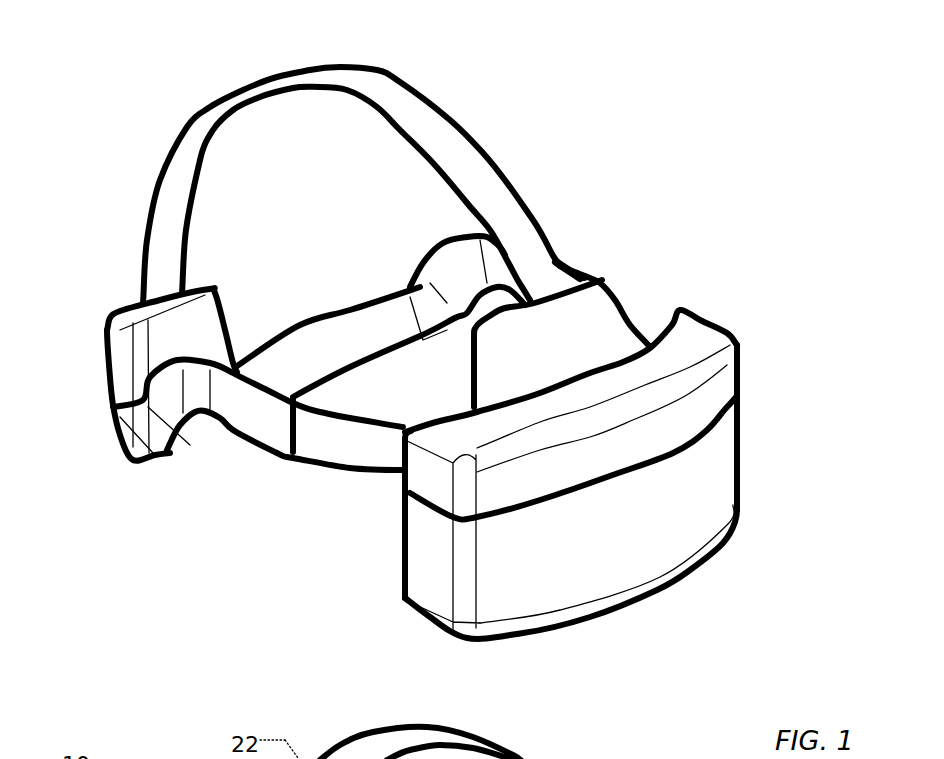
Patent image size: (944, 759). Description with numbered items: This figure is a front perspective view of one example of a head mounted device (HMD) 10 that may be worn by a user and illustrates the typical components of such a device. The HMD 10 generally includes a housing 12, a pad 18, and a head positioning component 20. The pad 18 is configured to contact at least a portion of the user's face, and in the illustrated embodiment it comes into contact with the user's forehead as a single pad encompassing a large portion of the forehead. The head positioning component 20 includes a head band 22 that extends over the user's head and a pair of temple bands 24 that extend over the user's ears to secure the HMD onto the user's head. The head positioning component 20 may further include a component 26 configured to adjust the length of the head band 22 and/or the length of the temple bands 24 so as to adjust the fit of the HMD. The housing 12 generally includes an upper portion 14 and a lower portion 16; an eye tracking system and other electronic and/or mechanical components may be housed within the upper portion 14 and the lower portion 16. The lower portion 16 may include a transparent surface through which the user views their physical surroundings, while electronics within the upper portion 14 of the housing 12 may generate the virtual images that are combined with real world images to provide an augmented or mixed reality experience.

The head mounted device 10 is at (126, 51).
The housing 12 is at (757, 310).
The upper portion 14 is at (717, 318).
The lower portion 16 is at (651, 534).
The pad 18 is at (586, 318).
The head positioning component 20 is at (103, 63).
The head band 22 is at (420, 92).
The temple bands 24 is at (428, 254).
The component 26 is at (212, 279).